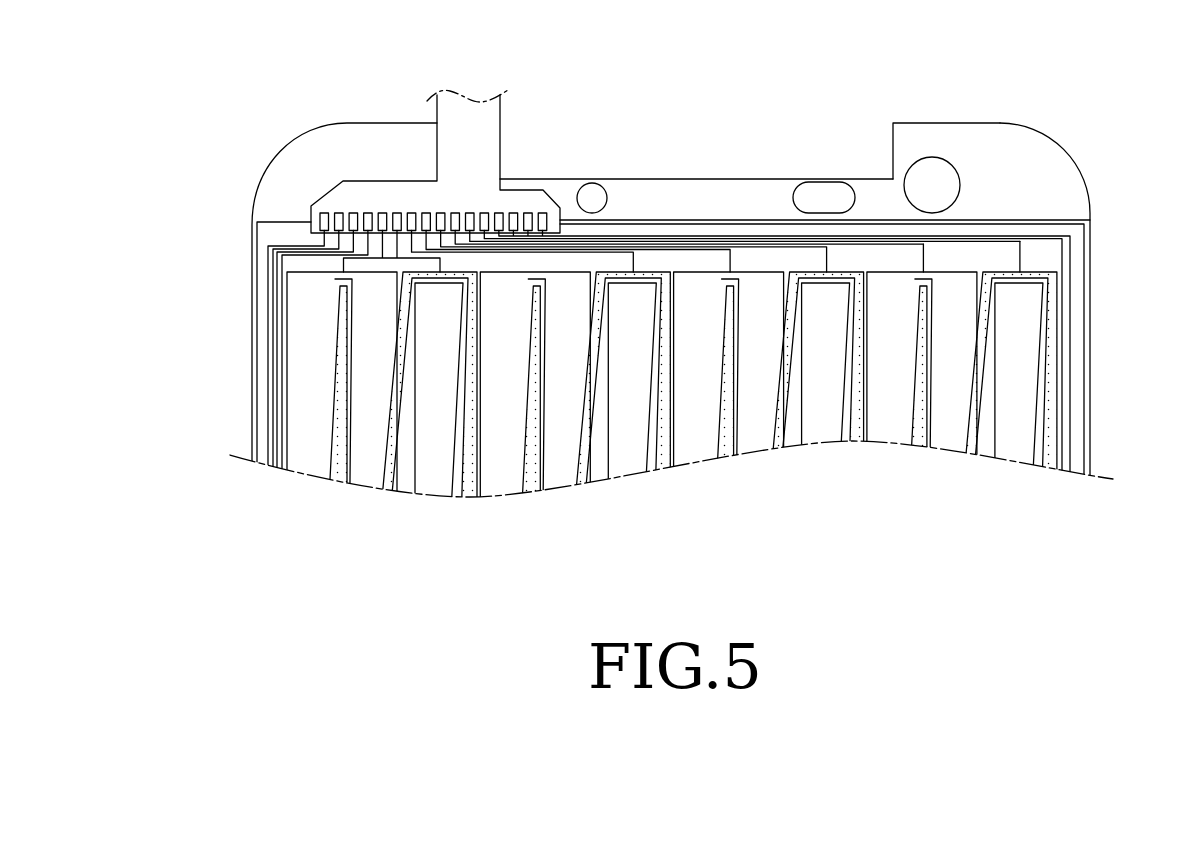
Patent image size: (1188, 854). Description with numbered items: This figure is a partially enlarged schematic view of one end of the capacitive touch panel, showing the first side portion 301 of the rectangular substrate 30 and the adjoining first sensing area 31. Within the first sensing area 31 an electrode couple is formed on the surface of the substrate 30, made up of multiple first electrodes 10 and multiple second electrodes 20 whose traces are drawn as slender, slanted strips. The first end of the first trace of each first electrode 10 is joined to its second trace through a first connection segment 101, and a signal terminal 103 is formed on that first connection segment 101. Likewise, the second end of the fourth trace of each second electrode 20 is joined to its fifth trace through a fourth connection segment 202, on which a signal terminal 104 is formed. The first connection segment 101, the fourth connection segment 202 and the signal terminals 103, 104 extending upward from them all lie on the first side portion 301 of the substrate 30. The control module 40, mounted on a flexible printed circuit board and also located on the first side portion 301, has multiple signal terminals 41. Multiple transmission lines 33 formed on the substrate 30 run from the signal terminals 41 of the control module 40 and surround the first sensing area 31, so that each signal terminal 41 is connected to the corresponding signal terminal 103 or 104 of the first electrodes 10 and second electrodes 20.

The first electrode 10 is at (298, 343).
The second electrode 20 is at (337, 413).
The substrate 30 is at (1093, 320).
The first sensing area 31 is at (1063, 427).
The transmission lines 33 is at (647, 243).
The control module 40 is at (372, 181).
The signal terminal 41 is at (325, 224).
The first connection segment 101 is at (918, 273).
The signal terminal 103 is at (923, 258).
The signal terminal 104 is at (1018, 253).
The fourth connection segment 202 is at (1040, 273).
The first side portion 301 is at (1003, 195).